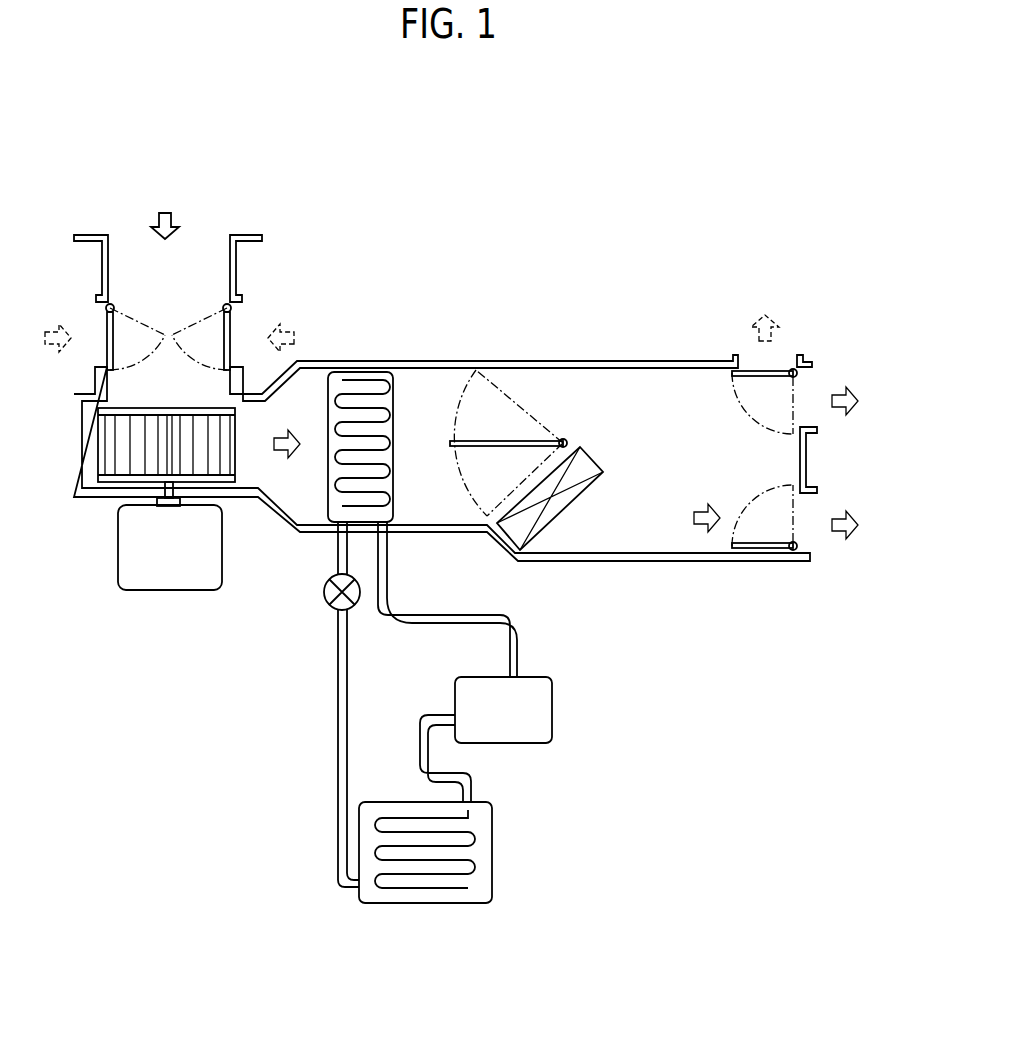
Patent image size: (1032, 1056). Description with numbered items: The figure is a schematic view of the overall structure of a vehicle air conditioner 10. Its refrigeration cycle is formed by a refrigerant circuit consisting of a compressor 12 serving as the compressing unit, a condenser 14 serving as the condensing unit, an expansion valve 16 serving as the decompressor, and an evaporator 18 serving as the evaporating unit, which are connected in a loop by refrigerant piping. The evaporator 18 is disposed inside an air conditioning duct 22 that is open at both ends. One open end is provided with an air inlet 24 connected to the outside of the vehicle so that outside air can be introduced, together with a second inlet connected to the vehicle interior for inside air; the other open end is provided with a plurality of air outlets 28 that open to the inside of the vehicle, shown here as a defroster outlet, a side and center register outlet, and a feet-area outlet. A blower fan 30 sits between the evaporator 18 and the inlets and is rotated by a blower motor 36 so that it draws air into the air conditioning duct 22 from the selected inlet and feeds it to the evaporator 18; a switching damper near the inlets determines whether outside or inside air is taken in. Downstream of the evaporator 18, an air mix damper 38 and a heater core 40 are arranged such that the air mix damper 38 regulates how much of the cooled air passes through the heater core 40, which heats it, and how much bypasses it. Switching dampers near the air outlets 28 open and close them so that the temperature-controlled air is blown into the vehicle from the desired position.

The vehicle air conditioner 10 is at (565, 152).
The compressor 12 is at (457, 677).
The condenser 14 is at (410, 802).
The expansion valve 16 is at (323, 590).
The evaporator 18 is at (325, 493).
The air conditioning duct 22 is at (432, 360).
The air inlet 24 is at (215, 222).
The air outlets 28 is at (748, 343).
The blower fan 30 is at (97, 458).
The blower motor 36 is at (115, 538).
The air mix damper 38 is at (540, 438).
The heater core 40 is at (590, 497).